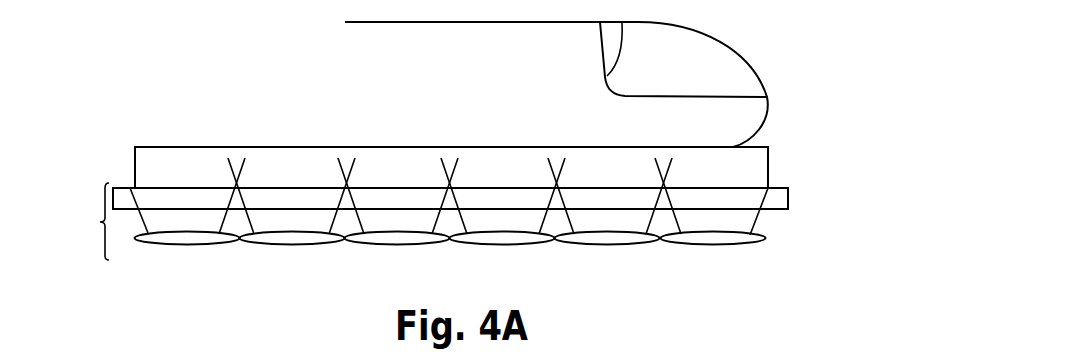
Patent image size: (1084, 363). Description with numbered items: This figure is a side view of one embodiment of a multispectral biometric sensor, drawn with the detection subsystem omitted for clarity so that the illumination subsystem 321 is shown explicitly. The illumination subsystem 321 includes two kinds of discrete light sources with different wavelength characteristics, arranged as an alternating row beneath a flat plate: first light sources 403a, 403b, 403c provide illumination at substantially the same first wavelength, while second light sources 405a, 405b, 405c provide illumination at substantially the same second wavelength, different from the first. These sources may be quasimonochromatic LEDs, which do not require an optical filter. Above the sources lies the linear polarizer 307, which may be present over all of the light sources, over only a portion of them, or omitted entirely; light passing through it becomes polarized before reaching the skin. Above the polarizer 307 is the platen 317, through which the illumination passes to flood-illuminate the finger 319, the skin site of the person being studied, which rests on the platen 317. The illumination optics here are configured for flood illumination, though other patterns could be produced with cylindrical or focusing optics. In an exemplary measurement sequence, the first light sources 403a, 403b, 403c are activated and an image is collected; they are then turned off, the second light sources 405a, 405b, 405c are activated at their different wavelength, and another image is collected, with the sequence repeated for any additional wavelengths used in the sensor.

The finger 319 is at (717, 38).
The platen 317 is at (768, 163).
The linear polarizer 307 is at (780, 213).
The illumination subsystem 321 is at (85, 221).
The first light source 403a is at (160, 245).
The second light source 405a is at (265, 245).
The first light source 403b is at (370, 245).
The second light source 405b is at (475, 245).
The first light source 403c is at (580, 245).
The second light source 405c is at (686, 245).